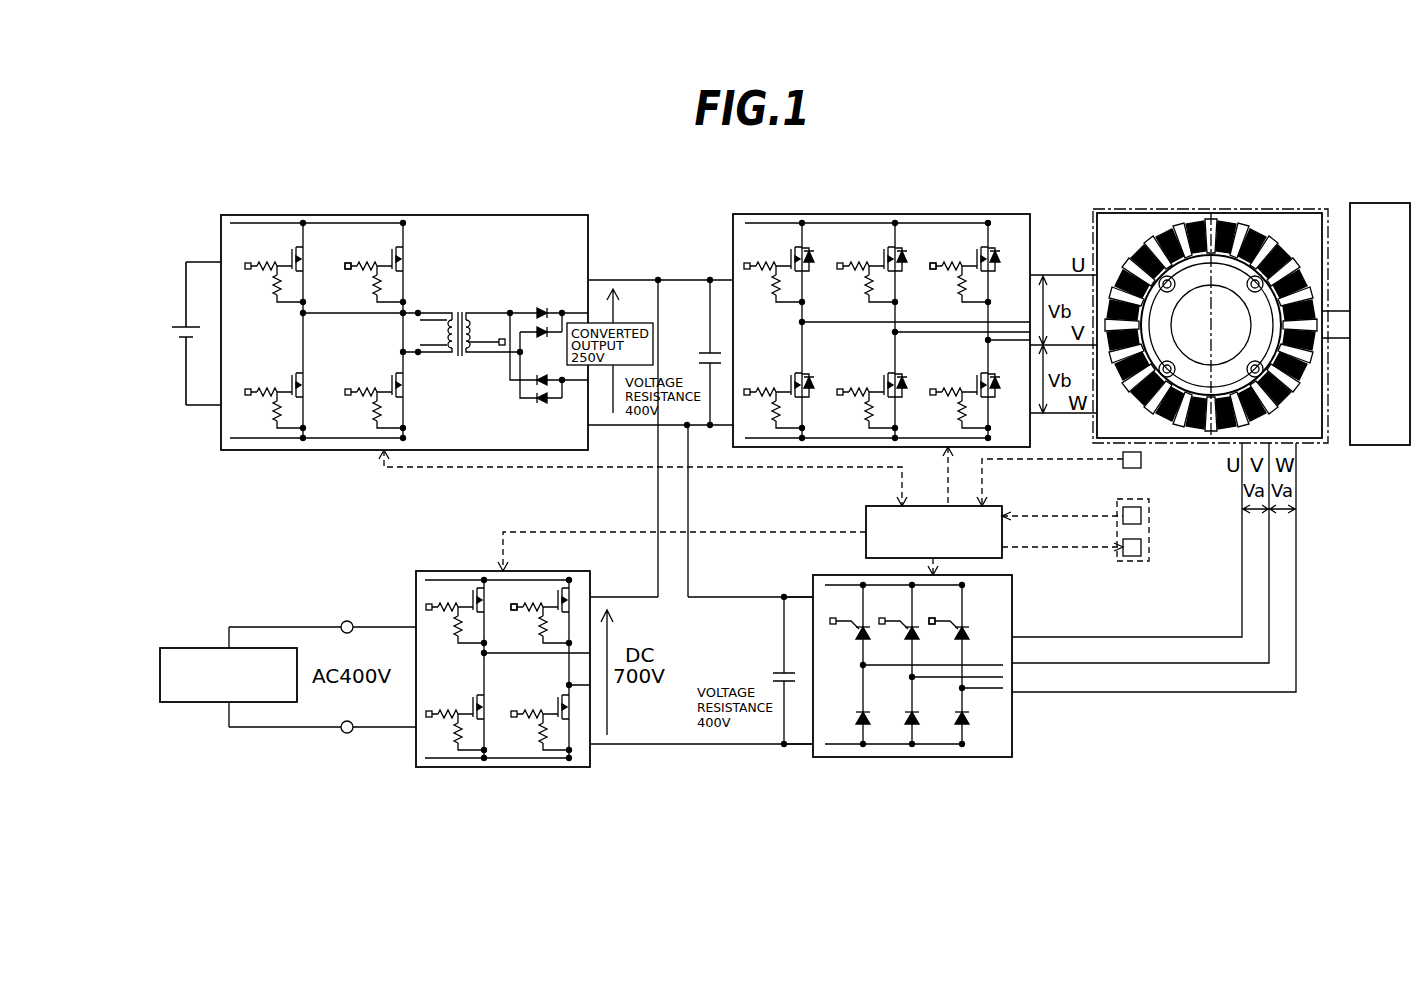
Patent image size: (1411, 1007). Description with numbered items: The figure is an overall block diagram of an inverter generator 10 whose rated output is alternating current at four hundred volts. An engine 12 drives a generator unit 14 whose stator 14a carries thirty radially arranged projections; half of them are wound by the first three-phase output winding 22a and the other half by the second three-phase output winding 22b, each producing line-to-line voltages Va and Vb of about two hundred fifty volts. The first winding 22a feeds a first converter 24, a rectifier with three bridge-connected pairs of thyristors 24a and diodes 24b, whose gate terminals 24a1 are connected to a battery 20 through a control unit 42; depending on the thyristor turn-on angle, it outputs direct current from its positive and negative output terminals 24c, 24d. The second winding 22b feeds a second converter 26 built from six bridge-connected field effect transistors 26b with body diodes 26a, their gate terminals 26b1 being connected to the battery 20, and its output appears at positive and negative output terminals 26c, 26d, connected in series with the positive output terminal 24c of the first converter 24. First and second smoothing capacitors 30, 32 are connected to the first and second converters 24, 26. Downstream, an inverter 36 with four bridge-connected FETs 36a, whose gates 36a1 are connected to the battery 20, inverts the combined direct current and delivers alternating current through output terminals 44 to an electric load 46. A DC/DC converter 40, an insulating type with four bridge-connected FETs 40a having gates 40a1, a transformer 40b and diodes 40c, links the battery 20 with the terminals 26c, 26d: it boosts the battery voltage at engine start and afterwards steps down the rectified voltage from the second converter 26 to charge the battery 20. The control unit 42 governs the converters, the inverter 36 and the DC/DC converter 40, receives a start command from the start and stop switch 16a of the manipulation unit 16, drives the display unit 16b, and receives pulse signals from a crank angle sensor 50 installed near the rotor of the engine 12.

The inverter generator 10 is at (1090, 183).
The engine 12 is at (1380, 203).
The generator unit 14 is at (1240, 212).
The stator 14a is at (1202, 205).
The manipulation unit 16 is at (1135, 505).
The start and stop switch 16a is at (1141, 516).
The display unit 16b is at (1141, 547).
The battery 20 is at (180, 326).
The first three-phase output winding 22a is at (1250, 240).
The second three-phase output winding 22b is at (1120, 270).
The first converter 24 is at (1012, 592).
The thyristor 24a is at (965, 624).
The gate terminal 24a1 is at (936, 619).
The diode 24b is at (965, 710).
The positive output terminal 24c is at (812, 597).
The negative output terminal 24d is at (812, 748).
The second converter 26 is at (940, 214).
The body diode 26a is at (1000, 258).
The field effect transistor 26b is at (978, 248).
The gate terminal 26b1 is at (928, 270).
The positive output terminal 26c is at (733, 280).
The negative output terminal 26d is at (733, 425).
The first smoothing capacitor 30 is at (781, 668).
The second smoothing capacitor 32 is at (707, 350).
The inverter 36 is at (447, 571).
The field effect transistor 36a is at (562, 607).
The gate 36a1 is at (516, 616).
The DC/DC converter 40 is at (481, 215).
The field effect transistor 40a is at (392, 257).
The gate 40a1 is at (345, 272).
The transformer 40b is at (466, 313).
The diode 40c is at (540, 310).
The control unit 42 is at (992, 506).
The output terminal 44 is at (347, 621).
The electric load 46 is at (203, 648).
The crank angle sensor 50 is at (1141, 460).